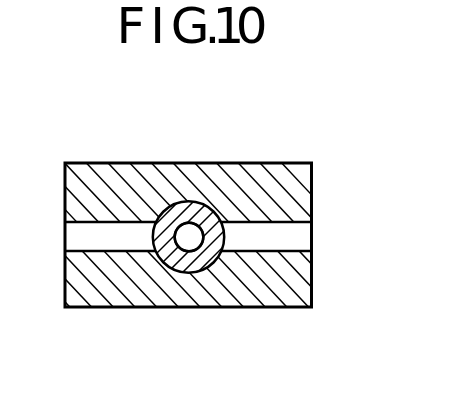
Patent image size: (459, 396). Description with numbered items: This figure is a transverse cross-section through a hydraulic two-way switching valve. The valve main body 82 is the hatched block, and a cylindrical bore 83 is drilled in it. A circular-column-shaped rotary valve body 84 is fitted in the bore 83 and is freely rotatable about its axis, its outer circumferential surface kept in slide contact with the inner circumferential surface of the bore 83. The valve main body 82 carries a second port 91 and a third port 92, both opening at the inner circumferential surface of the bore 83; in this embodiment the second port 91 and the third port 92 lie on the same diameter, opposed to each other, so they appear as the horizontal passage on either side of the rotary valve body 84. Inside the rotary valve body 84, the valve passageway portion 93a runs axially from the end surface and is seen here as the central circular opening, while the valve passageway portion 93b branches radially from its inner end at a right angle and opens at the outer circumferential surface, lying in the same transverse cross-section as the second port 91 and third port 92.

The valve main body 82 is at (288, 170).
The cylindrical bore 83 is at (202, 211).
The rotary valve body 84 is at (178, 207).
The second port 91 is at (280, 245).
The third port 92 is at (119, 247).
The valve passageway portion 93a is at (188, 246).
The valve passageway portion 93b is at (218, 241).